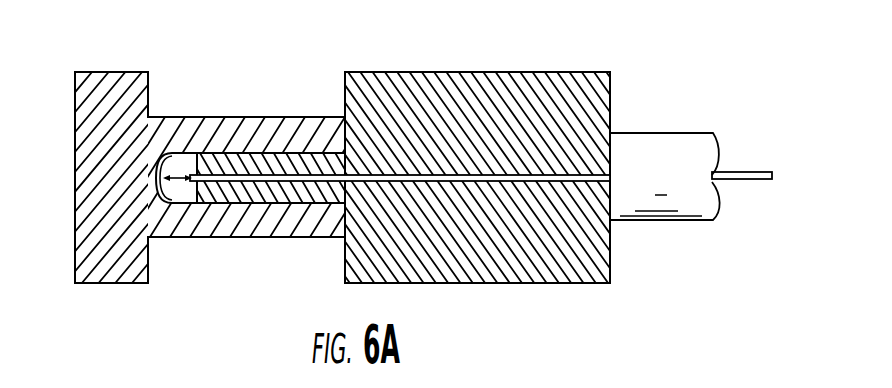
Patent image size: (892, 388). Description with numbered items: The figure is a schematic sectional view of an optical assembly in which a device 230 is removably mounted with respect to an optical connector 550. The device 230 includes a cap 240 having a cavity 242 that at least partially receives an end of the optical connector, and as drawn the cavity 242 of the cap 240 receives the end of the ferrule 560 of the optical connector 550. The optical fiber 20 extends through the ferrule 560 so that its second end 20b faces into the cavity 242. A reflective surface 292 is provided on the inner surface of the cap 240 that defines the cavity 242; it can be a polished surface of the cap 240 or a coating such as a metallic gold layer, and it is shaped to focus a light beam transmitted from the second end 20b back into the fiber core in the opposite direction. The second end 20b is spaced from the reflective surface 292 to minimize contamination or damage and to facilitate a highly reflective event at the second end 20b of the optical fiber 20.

The optical fiber 20 is at (754, 166).
The second end of the optical fiber 20b is at (182, 197).
The device 230 is at (124, 311).
The cap 240 is at (133, 72).
The cavity 242 is at (292, 208).
The reflective surface 292 is at (176, 195).
The optical connector 550 is at (568, 60).
The ferrule 560 is at (291, 153).